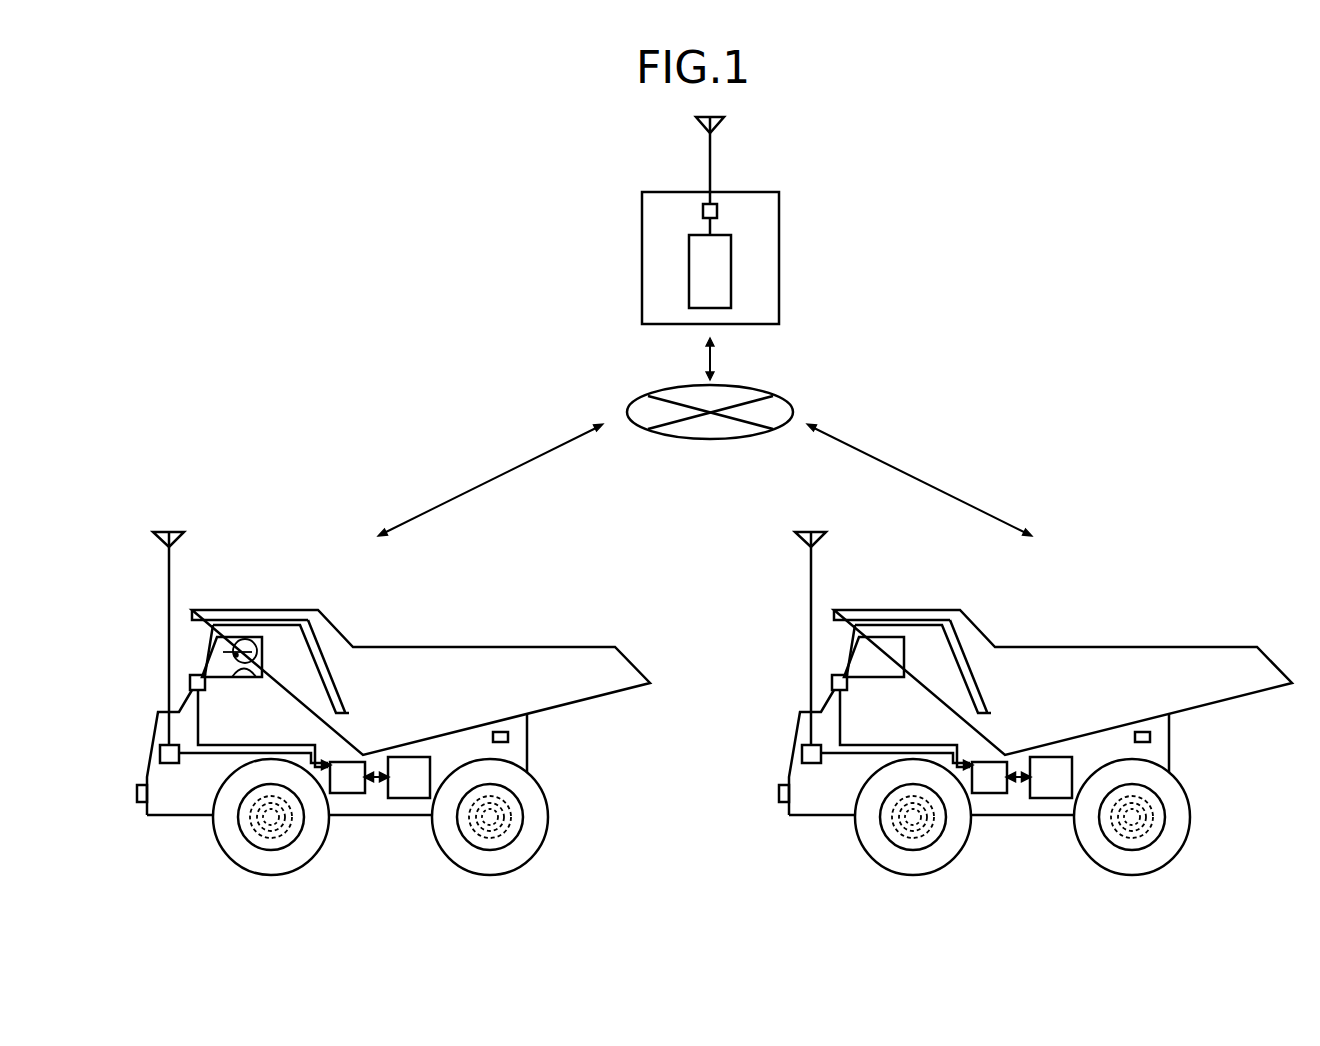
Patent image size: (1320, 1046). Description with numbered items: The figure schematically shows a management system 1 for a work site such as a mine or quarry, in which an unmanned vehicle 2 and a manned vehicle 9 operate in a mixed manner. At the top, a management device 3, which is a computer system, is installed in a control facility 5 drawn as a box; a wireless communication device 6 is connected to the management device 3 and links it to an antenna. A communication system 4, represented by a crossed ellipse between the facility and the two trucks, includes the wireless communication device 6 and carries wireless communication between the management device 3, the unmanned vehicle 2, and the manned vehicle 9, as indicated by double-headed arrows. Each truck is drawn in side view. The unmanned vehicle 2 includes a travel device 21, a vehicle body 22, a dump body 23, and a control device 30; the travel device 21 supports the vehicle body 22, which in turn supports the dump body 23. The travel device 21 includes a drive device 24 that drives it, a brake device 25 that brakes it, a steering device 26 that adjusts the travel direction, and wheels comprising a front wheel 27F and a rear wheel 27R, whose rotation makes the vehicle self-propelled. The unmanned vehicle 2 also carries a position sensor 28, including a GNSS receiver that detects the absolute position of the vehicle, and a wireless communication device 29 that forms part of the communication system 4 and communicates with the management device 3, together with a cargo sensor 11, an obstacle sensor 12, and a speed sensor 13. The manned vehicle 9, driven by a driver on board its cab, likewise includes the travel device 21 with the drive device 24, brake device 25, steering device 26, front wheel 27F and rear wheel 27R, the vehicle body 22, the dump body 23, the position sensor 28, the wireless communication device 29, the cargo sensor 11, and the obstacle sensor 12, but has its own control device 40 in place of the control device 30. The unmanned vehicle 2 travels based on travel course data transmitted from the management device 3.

The management system 1 is at (995, 153).
The unmanned vehicle 2 is at (999, 669).
The management device 3 is at (689, 265).
The communication system 4 is at (785, 396).
The control facility 5 is at (664, 187).
The wireless communication device 6 is at (703, 211).
The manned vehicle 9 is at (484, 604).
The cargo sensor 11 is at (508, 737).
The obstacle sensor 12 is at (138, 784).
The speed sensor 13 is at (520, 843).
The travel device 21 is at (206, 836).
The vehicle body 22 is at (531, 752).
The dump body 23 is at (403, 647).
The drive device 24 is at (405, 798).
The brake device 25 is at (472, 845).
The steering device 26 is at (283, 822).
The front wheel 27F is at (272, 849).
The rear wheel 27R is at (490, 849).
The position sensor 28 is at (190, 677).
The wireless communication device 29 is at (163, 743).
The control device 30 is at (994, 817).
The control device 40 is at (347, 793).